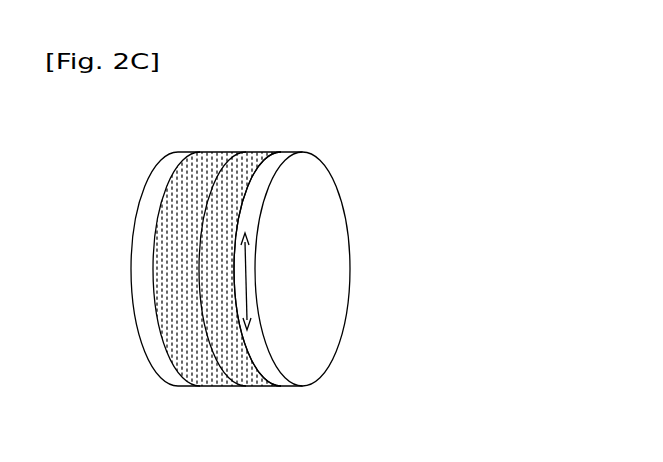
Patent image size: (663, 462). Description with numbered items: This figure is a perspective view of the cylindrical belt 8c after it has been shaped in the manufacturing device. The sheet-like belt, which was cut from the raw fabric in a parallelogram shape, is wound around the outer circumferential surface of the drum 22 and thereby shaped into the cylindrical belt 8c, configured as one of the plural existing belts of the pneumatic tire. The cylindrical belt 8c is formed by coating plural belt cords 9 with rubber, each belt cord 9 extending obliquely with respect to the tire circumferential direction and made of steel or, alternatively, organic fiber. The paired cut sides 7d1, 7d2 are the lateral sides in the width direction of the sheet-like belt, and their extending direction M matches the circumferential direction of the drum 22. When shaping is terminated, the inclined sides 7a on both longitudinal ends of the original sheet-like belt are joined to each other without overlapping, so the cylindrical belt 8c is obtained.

The inclined side 7a is at (207, 194).
The cut side 7d1 is at (157, 227).
The cut side 7d2 is at (244, 203).
The cylindrical belt 8c is at (232, 152).
The belt cord 9 is at (180, 320).
The drum 22 is at (340, 255).
The extending direction M is at (255, 286).